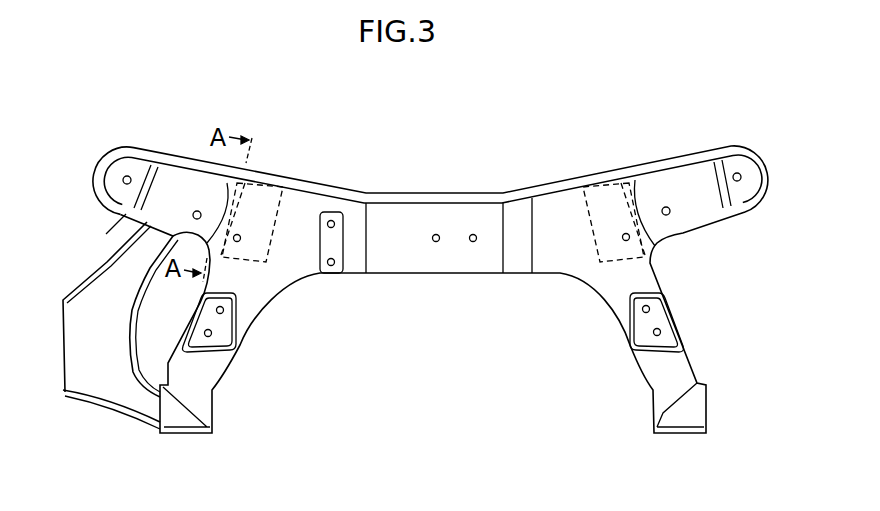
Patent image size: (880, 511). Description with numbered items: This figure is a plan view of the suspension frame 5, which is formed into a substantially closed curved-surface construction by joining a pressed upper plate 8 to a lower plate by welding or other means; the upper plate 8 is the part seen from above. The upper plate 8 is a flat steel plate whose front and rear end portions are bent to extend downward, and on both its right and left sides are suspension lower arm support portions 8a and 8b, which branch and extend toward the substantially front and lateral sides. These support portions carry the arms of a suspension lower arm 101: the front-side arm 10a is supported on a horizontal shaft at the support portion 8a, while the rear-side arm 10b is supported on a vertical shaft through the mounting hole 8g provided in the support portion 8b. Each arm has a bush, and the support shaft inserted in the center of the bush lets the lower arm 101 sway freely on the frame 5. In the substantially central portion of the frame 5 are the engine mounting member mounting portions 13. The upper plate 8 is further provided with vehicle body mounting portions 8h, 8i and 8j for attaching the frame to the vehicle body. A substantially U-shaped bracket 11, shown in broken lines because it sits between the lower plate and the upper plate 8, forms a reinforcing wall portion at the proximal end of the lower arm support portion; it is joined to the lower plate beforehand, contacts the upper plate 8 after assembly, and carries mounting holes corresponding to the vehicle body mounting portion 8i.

The suspension frame 5 is at (461, 192).
The upper plate 8 is at (572, 280).
The suspension lower arm support portion 8a is at (199, 392).
The suspension lower arm support portion 8b is at (173, 176).
The mounting hole 8g is at (665, 206).
The vehicle body mounting portion 8h is at (658, 331).
The vehicle body mounting portion 8i is at (655, 246).
The vehicle body mounting portion 8j is at (739, 182).
The front-side arm 10a is at (149, 408).
The rear-side arm 10b is at (124, 243).
The suspension lower arm 101 is at (87, 400).
The bracket 11 is at (286, 186).
The engine mounting member mounting portions 13 is at (437, 242).